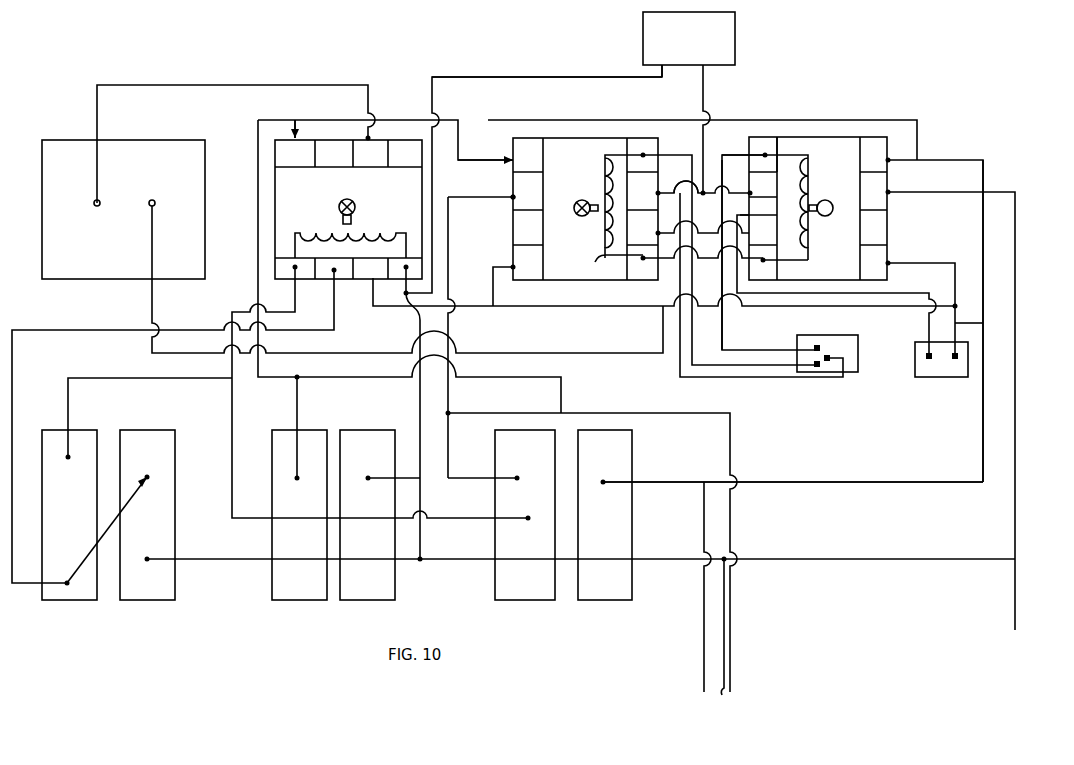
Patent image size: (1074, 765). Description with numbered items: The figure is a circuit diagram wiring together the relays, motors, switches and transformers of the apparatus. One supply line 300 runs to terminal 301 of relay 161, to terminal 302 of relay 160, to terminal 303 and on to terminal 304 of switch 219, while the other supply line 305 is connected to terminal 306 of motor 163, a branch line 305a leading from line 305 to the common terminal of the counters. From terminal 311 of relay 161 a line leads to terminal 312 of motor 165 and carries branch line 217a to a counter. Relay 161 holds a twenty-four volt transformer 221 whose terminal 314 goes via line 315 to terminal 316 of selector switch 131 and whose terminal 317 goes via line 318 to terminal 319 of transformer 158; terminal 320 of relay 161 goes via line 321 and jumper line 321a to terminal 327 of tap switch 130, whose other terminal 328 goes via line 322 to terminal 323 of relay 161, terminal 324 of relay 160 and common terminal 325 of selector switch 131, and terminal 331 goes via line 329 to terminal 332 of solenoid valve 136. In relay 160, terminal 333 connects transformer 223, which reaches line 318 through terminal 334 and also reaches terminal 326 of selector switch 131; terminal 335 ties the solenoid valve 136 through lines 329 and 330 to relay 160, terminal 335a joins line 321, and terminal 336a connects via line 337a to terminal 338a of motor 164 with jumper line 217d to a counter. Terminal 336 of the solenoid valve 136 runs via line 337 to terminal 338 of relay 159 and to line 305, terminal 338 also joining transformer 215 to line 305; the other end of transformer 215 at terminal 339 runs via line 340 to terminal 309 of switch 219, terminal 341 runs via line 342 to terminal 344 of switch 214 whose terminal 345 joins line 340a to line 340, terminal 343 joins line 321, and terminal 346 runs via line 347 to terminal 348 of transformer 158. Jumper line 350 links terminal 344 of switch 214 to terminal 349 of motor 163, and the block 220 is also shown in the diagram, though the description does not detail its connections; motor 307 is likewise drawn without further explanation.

The tap switch 130 is at (948, 375).
The selector switch 131 is at (846, 340).
The solenoid valve 136 is at (703, 36).
The transformer 158 is at (110, 241).
The relay 159 is at (362, 194).
The relay 160 is at (588, 173).
The relay 161 is at (848, 168).
The motor 163 is at (160, 586).
The motor 164 is at (381, 586).
The motor 165 is at (618, 586).
The switch 214 is at (73, 569).
The transformer 215 is at (382, 227).
The branch line 217a is at (704, 658).
The jumper line 217d is at (488, 412).
The switch 219 is at (539, 588).
The terminal block 220 is at (312, 591).
The 24 v. transformer 221 is at (812, 248).
The 24 v. transformer 223 is at (600, 256).
The 110-115 v. line 300 is at (318, 119).
The terminal 301 is at (890, 157).
The terminal 302 is at (511, 157).
The terminal 303 is at (297, 138).
The terminal 304 is at (492, 467).
The 110-115 v. line 305 is at (221, 557).
The branch line 305a is at (727, 640).
The terminal 306 is at (147, 556).
The terminal 307 is at (296, 436).
The terminal 309 is at (528, 516).
The terminal 311 is at (890, 192).
The terminal 312 is at (603, 480).
The terminal 314 is at (778, 135).
The line 315 is at (764, 153).
The terminal 316 is at (817, 344).
The terminal 317 is at (763, 257).
The line 318 is at (600, 353).
The terminal 319 is at (153, 200).
The terminal 320 is at (890, 261).
The line 321 is at (456, 292).
The jumper line 321a is at (989, 324).
The line 322 is at (887, 293).
The terminal 323 is at (750, 216).
The terminal 324 is at (657, 233).
The common terminal 325 is at (828, 362).
The terminal 326 is at (816, 368).
The terminal 327 is at (960, 356).
The terminal 328 is at (929, 362).
The line 329 is at (712, 160).
The line 330 is at (674, 190).
The terminal 331 is at (765, 184).
The terminal 332 is at (714, 120).
The terminal 333 is at (645, 150).
The terminal 334 is at (643, 262).
The terminal 335 is at (657, 193).
The terminal 335a is at (532, 267).
The terminal 336 is at (664, 61).
The terminal 336a is at (532, 188).
The line 337 is at (602, 76).
The line 337a is at (452, 247).
The terminal 338 is at (407, 262).
The terminal 338a is at (386, 506).
The terminal 339 is at (296, 270).
The line 340 is at (296, 312).
The line 340a is at (140, 380).
The terminal 341 is at (336, 272).
The line 342 is at (342, 327).
The terminal 343 is at (375, 279).
The terminal 344 is at (67, 585).
The terminal 345 is at (66, 467).
The terminal 346 is at (366, 150).
The line 347 is at (249, 85).
The terminal 348 is at (99, 200).
The terminal 349 is at (147, 475).
The jumper line 350 is at (108, 520).